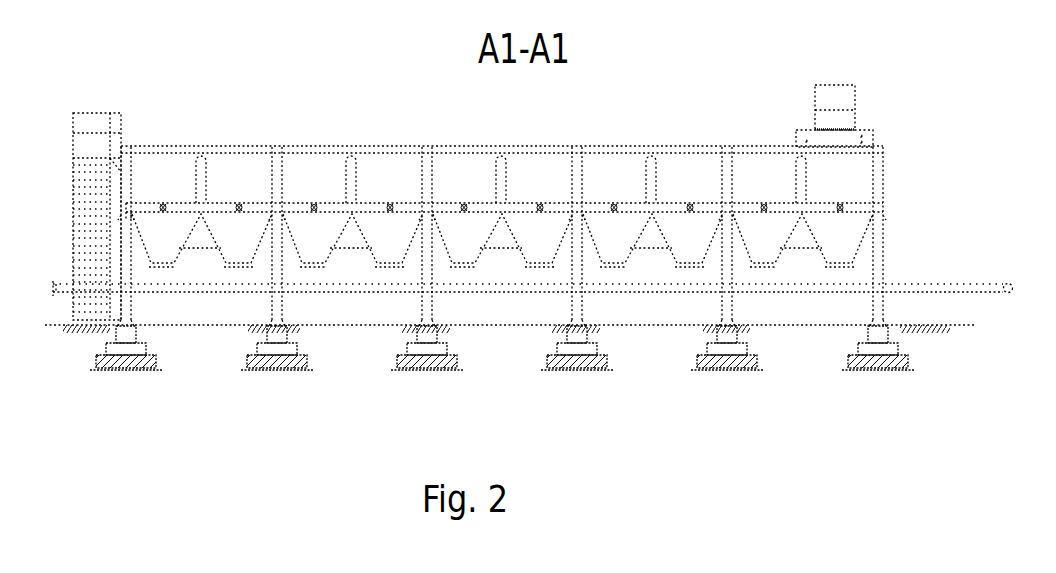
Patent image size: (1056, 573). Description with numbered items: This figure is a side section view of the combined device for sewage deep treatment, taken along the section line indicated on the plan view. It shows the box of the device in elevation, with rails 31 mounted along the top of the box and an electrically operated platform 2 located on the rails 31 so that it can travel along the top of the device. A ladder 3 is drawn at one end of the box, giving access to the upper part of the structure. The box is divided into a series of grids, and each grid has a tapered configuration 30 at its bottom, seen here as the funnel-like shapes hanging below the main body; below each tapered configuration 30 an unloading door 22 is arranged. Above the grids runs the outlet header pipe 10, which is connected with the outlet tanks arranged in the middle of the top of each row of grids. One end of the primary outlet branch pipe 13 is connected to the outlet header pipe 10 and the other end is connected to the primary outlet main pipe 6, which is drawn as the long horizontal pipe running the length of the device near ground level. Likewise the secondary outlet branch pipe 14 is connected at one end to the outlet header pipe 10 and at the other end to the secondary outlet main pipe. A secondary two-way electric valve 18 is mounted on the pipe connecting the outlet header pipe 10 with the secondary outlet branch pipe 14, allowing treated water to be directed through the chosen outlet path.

The electrically operated platform 2 is at (835, 102).
The ladder 3 is at (85, 167).
The primary outlet main pipe 6 is at (945, 287).
The outlet header pipe 10 is at (656, 170).
The primary outlet branch pipe 13 is at (884, 262).
The secondary outlet branch pipe 14 is at (413, 287).
The secondary two-way electric valve 18 is at (841, 205).
The unloading door 22 is at (613, 275).
The tapered configuration 30 is at (842, 240).
The rail 31 is at (248, 146).